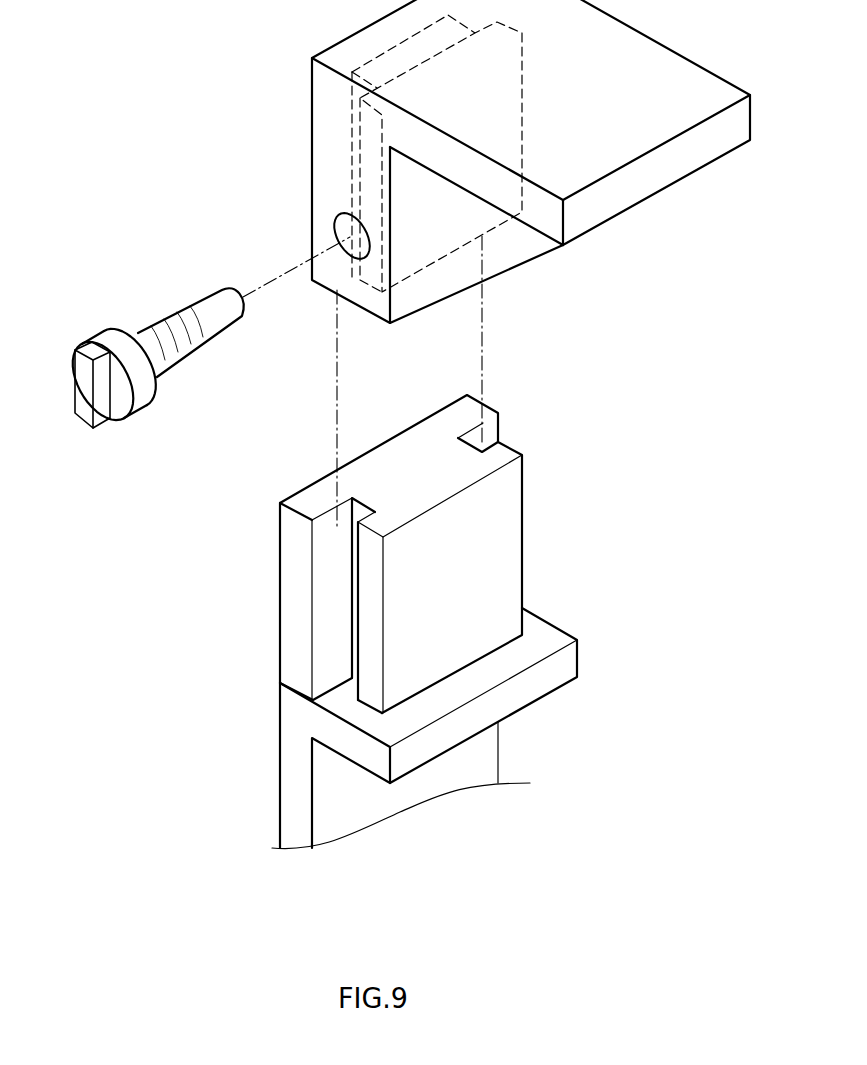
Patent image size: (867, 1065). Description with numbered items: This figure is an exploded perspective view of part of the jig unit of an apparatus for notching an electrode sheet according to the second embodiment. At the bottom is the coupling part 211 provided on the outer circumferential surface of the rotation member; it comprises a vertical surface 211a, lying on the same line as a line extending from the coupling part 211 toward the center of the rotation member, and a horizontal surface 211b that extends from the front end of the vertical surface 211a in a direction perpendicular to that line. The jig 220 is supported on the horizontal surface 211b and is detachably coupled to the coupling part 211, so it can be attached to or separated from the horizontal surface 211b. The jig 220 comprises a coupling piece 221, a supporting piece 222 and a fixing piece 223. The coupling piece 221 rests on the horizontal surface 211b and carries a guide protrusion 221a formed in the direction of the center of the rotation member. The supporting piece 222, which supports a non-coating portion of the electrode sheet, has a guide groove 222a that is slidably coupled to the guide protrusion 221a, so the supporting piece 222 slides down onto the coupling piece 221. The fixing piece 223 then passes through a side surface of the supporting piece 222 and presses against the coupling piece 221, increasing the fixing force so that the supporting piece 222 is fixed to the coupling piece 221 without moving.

The coupling part 211 is at (177, 753).
The vertical surface 211a is at (293, 815).
The horizontal surface 211b is at (353, 747).
The jig 220 is at (253, 376).
The coupling piece 221 is at (293, 604).
The guide protrusion 221a is at (523, 527).
The supporting piece 222 is at (336, 292).
The guide groove 222a is at (452, 250).
The fixing piece 223 is at (140, 398).